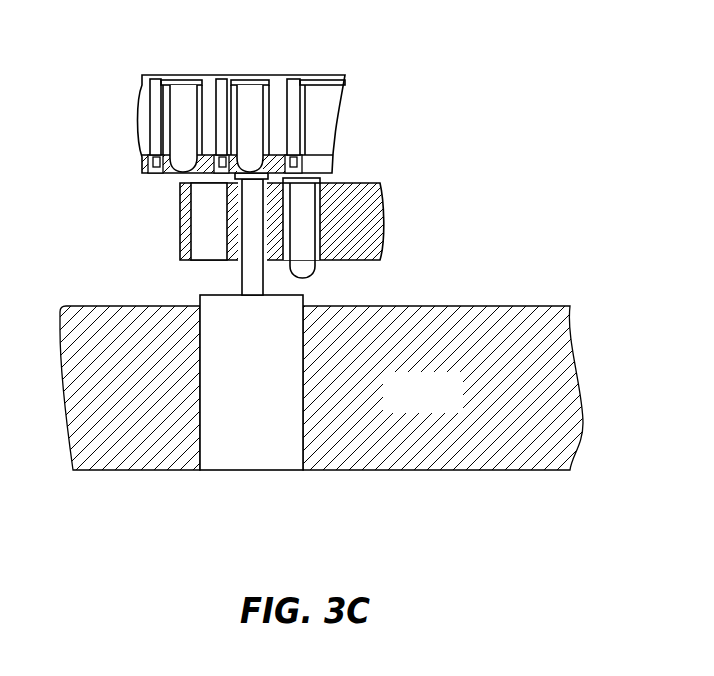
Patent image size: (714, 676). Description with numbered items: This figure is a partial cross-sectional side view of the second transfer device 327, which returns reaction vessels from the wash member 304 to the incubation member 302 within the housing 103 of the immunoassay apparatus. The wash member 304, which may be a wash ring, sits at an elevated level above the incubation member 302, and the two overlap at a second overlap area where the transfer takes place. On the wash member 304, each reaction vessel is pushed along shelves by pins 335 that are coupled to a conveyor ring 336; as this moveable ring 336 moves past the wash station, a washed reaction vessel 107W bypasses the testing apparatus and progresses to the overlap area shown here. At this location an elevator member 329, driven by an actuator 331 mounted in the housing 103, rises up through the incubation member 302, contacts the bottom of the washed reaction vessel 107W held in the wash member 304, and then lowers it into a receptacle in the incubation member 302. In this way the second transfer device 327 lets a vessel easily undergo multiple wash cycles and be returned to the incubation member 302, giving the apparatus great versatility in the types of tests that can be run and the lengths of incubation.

The housing 103 is at (443, 402).
The actuator 331 is at (272, 394).
The incubation member 302 is at (252, 220).
The second transfer device 327 is at (153, 209).
The elevator member 329 is at (252, 280).
The wash member 304 is at (246, 103).
The pins 335 is at (223, 83).
The conveyor ring 336 is at (140, 167).
The washed reaction vessel 107W is at (250, 130).